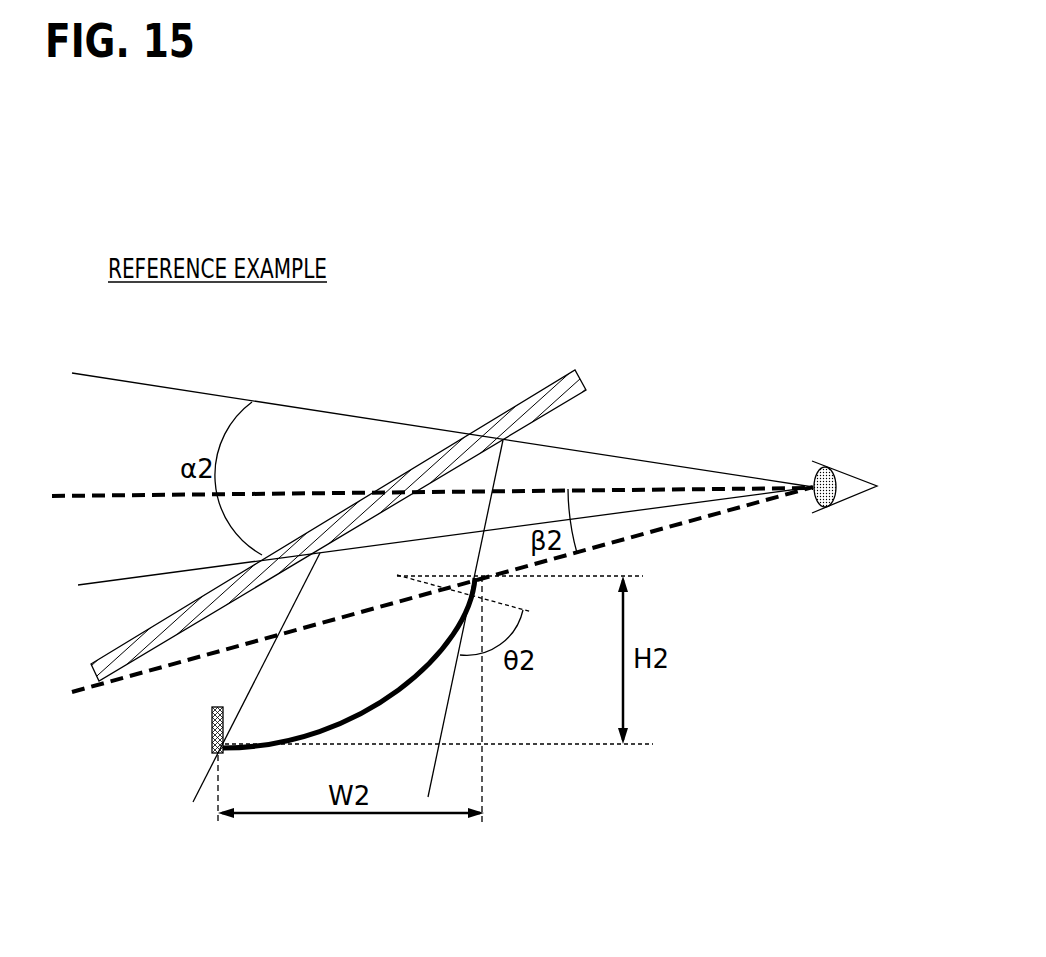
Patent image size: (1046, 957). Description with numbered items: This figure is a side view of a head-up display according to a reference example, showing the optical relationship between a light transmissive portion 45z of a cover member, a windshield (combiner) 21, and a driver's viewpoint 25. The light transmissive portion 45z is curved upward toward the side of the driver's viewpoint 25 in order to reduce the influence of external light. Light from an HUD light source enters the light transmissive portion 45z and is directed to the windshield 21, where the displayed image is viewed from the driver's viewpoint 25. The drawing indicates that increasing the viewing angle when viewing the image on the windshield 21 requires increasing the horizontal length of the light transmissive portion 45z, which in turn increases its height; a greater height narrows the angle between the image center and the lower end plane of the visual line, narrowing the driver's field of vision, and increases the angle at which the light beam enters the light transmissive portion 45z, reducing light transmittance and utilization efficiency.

The windshield (combiner) 21 is at (537, 393).
The driver's viewpoint 25 is at (838, 469).
The light transmissive portion 45z is at (368, 691).